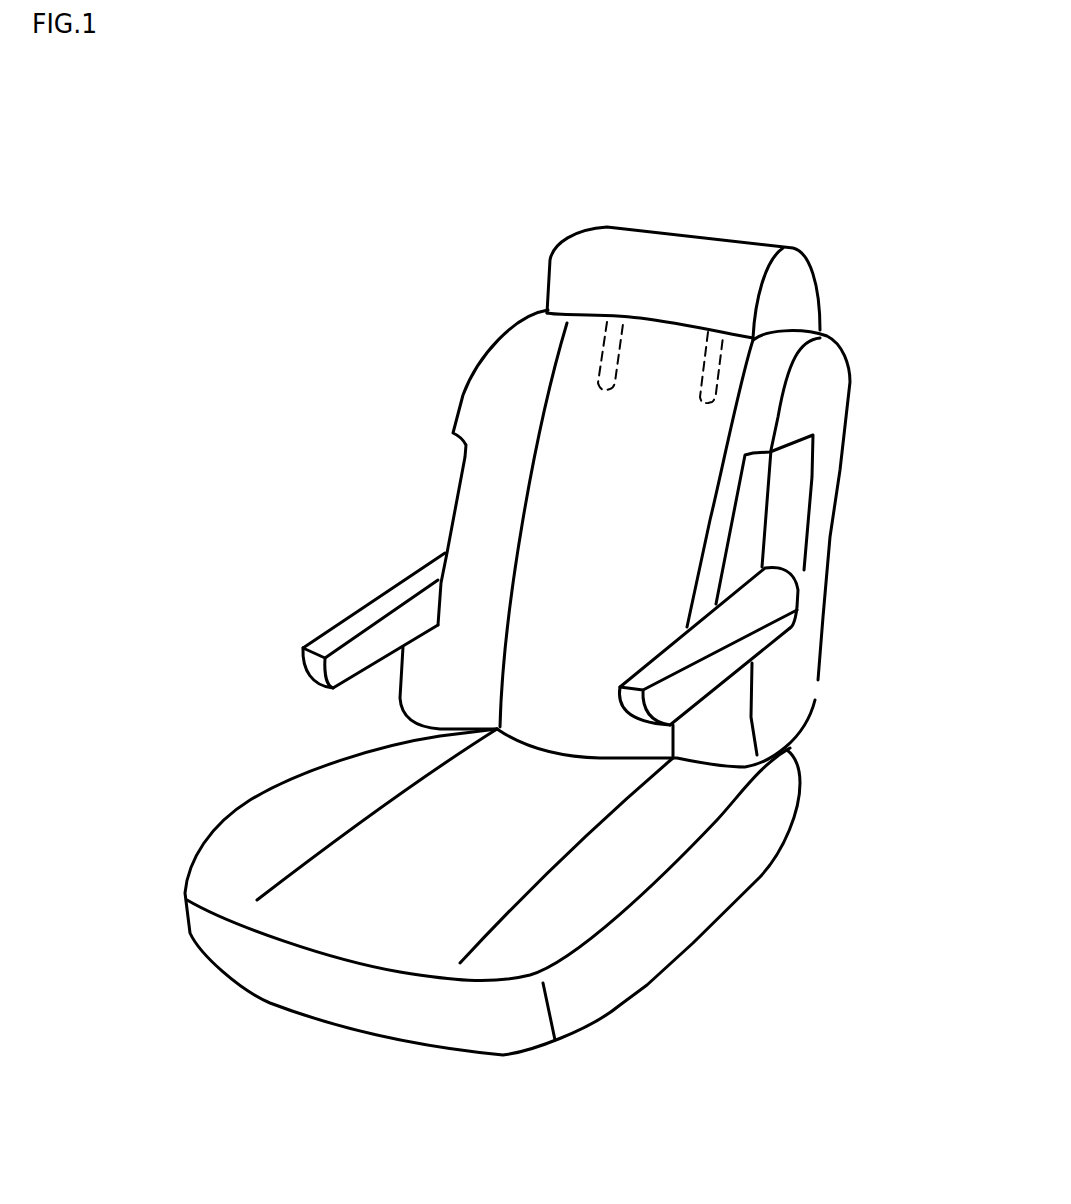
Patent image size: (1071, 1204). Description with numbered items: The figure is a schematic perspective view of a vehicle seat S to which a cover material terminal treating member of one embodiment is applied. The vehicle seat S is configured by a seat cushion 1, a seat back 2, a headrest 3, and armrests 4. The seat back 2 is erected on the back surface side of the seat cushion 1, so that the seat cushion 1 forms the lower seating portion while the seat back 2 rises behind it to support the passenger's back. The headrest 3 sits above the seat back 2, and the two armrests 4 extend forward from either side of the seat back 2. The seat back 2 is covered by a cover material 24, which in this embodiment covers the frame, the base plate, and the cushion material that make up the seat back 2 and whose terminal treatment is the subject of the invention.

The vehicle seat S is at (333, 450).
The seat cushion 1 is at (343, 783).
The seat back 2 is at (493, 388).
The headrest 3 is at (573, 263).
The armrests 4 is at (400, 613).
The cover material 24 is at (693, 450).